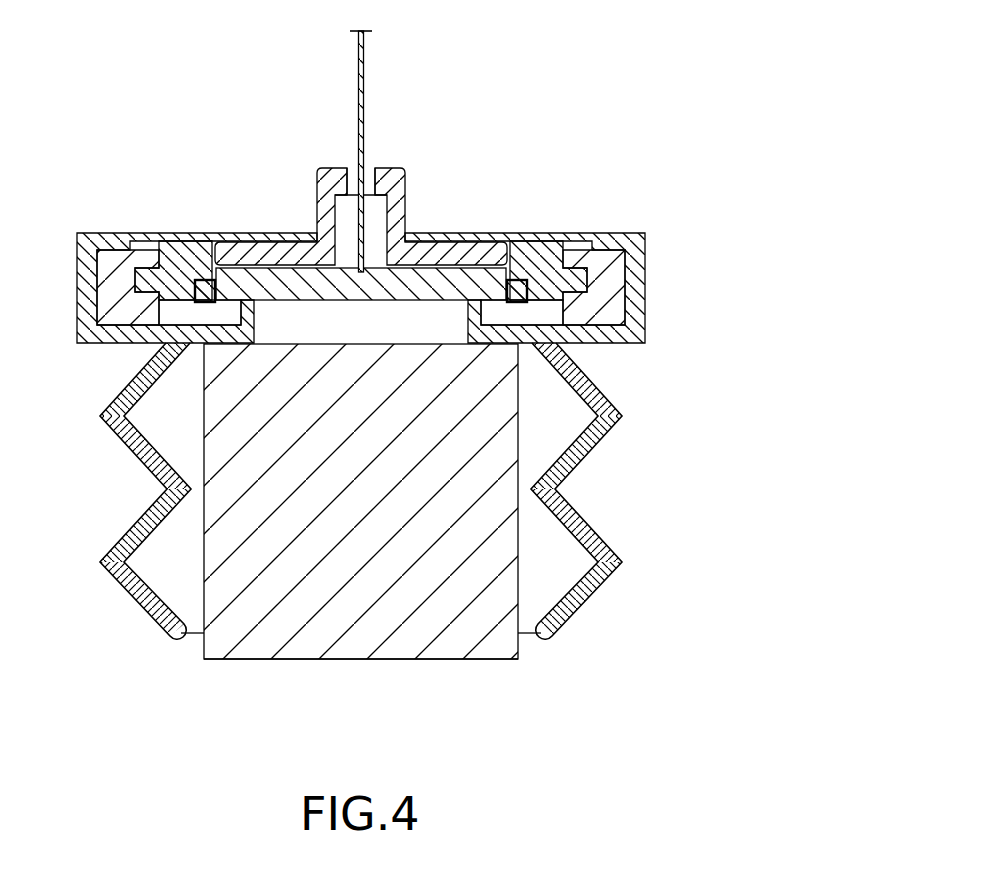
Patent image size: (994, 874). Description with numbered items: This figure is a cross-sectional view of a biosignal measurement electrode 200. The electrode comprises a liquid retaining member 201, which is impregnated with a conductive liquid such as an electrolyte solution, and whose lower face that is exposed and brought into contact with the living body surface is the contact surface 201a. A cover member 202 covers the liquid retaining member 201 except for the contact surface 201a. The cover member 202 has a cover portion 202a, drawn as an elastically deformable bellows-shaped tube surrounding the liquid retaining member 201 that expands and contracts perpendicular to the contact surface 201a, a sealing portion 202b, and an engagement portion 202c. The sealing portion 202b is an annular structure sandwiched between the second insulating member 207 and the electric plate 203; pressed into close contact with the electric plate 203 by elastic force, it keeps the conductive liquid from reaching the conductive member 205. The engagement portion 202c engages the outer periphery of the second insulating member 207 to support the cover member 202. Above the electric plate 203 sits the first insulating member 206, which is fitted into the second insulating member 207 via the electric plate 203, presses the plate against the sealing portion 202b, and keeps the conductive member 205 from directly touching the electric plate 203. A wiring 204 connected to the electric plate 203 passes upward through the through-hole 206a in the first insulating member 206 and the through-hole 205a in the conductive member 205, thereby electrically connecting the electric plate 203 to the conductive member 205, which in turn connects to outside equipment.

The biosignal measurement electrode 200 is at (705, 98).
The liquid retaining member 201 is at (365, 638).
The contact surface 201a is at (433, 660).
The cover member 202 is at (758, 313).
The cover portion 202a is at (606, 397).
The sealing portion 202b is at (507, 310).
The engagement portion 202c is at (643, 318).
The electric plate 203 is at (467, 288).
The wiring 204 is at (357, 50).
The conductive member 205 is at (243, 252).
The through-hole 205a is at (352, 168).
The first insulating member 206 is at (532, 258).
The through-hole 206a is at (372, 262).
The second insulating member 207 is at (124, 272).